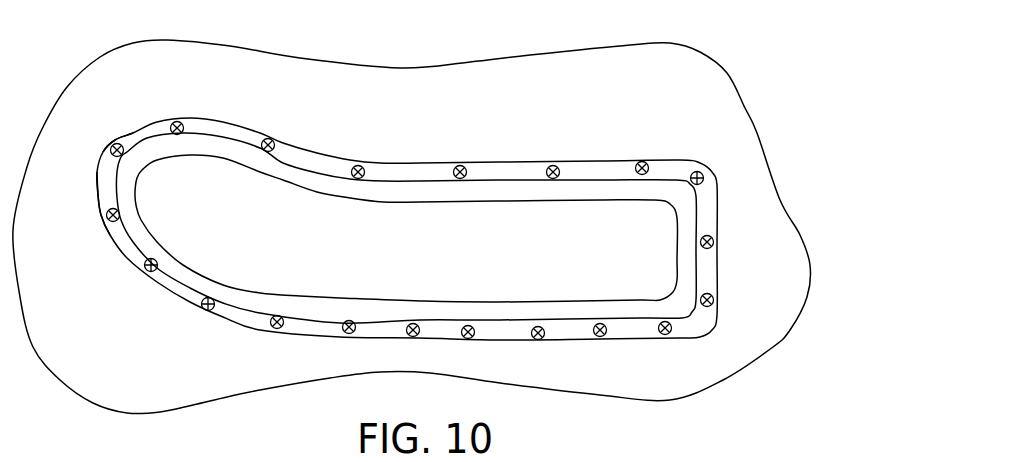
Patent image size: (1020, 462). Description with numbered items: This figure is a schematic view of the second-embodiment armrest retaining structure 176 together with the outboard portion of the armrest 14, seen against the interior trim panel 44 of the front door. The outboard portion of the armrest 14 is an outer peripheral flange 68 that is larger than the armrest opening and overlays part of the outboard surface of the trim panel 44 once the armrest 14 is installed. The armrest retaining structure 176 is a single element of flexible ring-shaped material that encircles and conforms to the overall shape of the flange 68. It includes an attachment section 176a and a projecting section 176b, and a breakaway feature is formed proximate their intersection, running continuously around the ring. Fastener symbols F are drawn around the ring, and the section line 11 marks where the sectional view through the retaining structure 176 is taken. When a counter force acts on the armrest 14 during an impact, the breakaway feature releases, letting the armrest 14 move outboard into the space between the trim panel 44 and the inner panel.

The interior trim panel 44 is at (440, 67).
The armrest 14 is at (207, 192).
The outer peripheral flange 68 is at (125, 180).
The armrest retaining structure 176 is at (606, 158).
The attachment section 176a is at (407, 175).
The projecting section 176b is at (310, 300).
The section line 11- 11 is at (553, 157).
The fasteners F is at (171, 128).